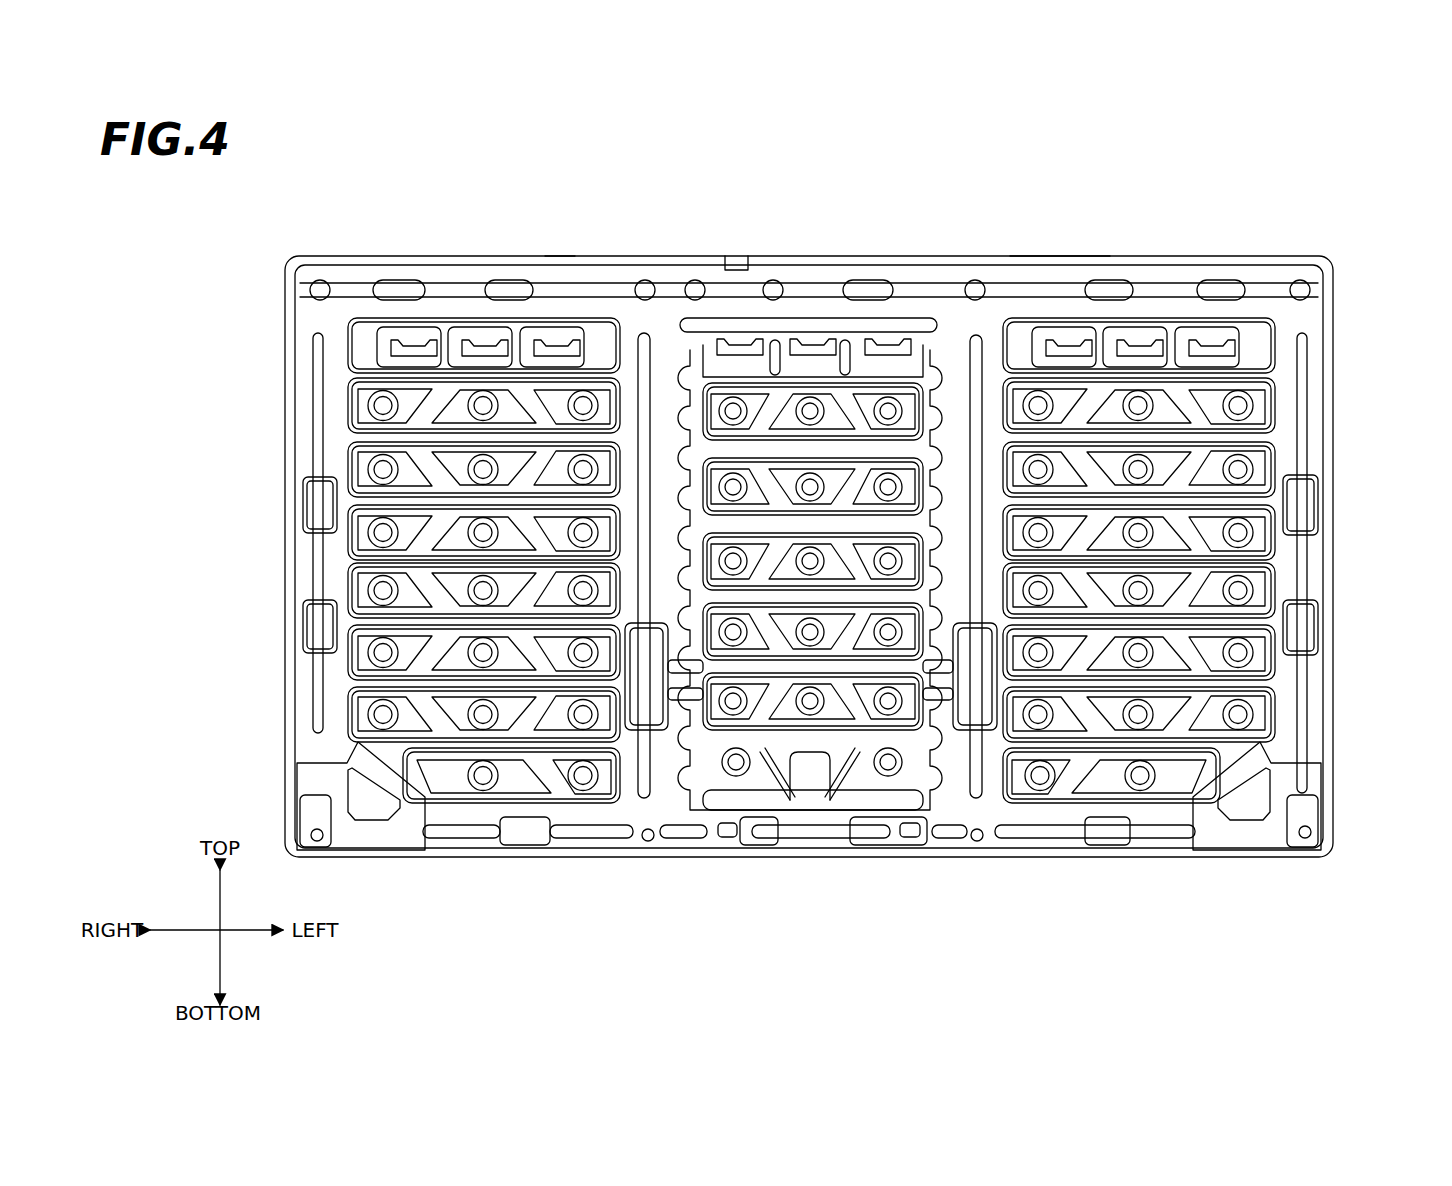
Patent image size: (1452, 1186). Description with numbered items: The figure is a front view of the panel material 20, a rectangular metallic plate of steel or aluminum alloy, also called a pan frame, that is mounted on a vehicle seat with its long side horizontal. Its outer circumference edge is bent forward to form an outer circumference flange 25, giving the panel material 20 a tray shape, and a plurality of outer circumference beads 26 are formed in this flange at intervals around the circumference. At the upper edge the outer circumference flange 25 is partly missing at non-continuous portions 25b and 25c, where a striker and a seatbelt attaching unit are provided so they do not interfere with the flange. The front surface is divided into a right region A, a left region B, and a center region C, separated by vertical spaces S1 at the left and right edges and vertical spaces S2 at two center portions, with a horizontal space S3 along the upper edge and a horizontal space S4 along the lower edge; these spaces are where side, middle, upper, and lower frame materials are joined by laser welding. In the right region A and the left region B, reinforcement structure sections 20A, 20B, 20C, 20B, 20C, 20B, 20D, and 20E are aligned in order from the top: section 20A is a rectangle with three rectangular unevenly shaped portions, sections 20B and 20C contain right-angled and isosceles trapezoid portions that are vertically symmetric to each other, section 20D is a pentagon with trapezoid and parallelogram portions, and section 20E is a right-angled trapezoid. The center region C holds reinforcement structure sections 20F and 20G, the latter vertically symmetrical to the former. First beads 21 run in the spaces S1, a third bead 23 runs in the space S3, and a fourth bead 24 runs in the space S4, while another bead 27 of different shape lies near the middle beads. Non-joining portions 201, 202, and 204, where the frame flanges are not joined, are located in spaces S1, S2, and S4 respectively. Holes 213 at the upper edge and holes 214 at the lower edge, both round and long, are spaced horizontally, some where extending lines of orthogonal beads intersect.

The panel material 20 is at (815, 210).
The reinforcement structure section 20A is at (348, 345).
The reinforcement structure section 20B is at (348, 405).
The reinforcement structure section 20C is at (348, 462).
The reinforcement structure section 20D is at (352, 705).
The reinforcement structure section 20E is at (590, 802).
The reinforcement structure section 20F is at (935, 355).
The reinforcement structure section 20G is at (945, 405).
The first bead 21 is at (312, 362).
The third bead 23 is at (540, 258).
The fourth bead 24 is at (582, 845).
The outer circumference flange 25 is at (1018, 252).
The non-continuous portion 25b is at (560, 262).
The non-continuous portion 25c is at (742, 270).
The outer circumference bead 26 is at (420, 262).
The bead 27 is at (683, 360).
The non-joining portion 201 is at (305, 500).
The non-joining portion 202 is at (645, 732).
The non-joining portion 204 is at (515, 845).
The hole 213 is at (313, 282).
The hole 214 is at (322, 840).
The right region A is at (450, 198).
The left region B is at (1210, 217).
The center region C is at (850, 172).
The space S1 is at (318, 735).
The space S2 is at (640, 340).
The space S3 is at (752, 257).
The space S4 is at (815, 845).